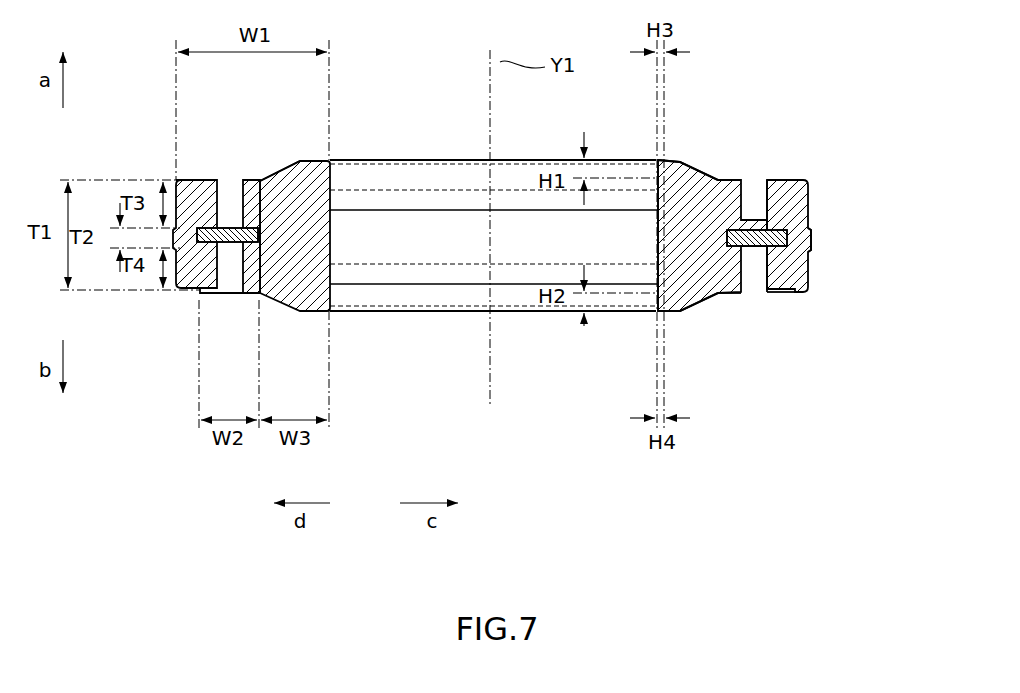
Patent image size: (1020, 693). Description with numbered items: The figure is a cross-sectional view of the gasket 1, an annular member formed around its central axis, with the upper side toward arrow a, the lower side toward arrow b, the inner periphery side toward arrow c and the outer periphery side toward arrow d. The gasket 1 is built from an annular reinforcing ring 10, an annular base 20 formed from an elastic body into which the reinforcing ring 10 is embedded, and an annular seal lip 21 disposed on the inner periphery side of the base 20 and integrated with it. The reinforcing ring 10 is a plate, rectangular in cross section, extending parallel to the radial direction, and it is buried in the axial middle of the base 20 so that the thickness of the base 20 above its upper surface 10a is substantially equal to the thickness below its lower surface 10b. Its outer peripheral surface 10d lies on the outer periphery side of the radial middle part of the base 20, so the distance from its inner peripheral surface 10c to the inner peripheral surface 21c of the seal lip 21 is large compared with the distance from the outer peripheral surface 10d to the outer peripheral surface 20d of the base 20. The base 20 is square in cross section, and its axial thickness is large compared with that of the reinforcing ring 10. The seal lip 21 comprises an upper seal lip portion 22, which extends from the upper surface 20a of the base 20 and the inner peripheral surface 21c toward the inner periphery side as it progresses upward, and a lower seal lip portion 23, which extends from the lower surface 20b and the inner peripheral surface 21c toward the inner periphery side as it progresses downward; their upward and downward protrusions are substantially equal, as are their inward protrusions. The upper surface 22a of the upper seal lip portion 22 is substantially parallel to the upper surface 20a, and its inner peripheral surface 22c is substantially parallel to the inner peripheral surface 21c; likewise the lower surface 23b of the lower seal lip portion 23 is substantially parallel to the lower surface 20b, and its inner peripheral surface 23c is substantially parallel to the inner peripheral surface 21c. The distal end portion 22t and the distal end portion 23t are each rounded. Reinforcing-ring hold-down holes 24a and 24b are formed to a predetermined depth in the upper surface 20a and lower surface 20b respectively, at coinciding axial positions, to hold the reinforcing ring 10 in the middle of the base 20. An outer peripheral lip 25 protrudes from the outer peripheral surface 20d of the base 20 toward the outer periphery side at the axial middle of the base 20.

The gasket 1 is at (834, 105).
The reinforcing ring 10 is at (799, 196).
The upper surface 10a is at (267, 180).
The lower surface 10b is at (232, 300).
The inner peripheral surface 10c is at (287, 300).
The outer peripheral surface 10d is at (237, 190).
The base 20 is at (824, 266).
The upper surface 20a is at (730, 173).
The lower surface 20b is at (730, 300).
The outer peripheral surface 20d is at (180, 184).
The seal lip 21 is at (660, 243).
The inner peripheral surface 21c is at (660, 222).
The upper seal lip portion 22 is at (713, 155).
The upper surface 22a is at (672, 165).
The inner peripheral surface 22c is at (657, 178).
The distal end portion 22t is at (331, 162).
The lower seal lip portion 23 is at (715, 324).
The lower surface 23b is at (672, 312).
The inner peripheral surface 23c is at (656, 302).
The distal end portion 23t is at (331, 310).
The reinforcing-ring hold-down hole 24a is at (766, 175).
The reinforcing-ring hold-down hole 24b is at (759, 294).
The outer peripheral lip 25 is at (813, 239).